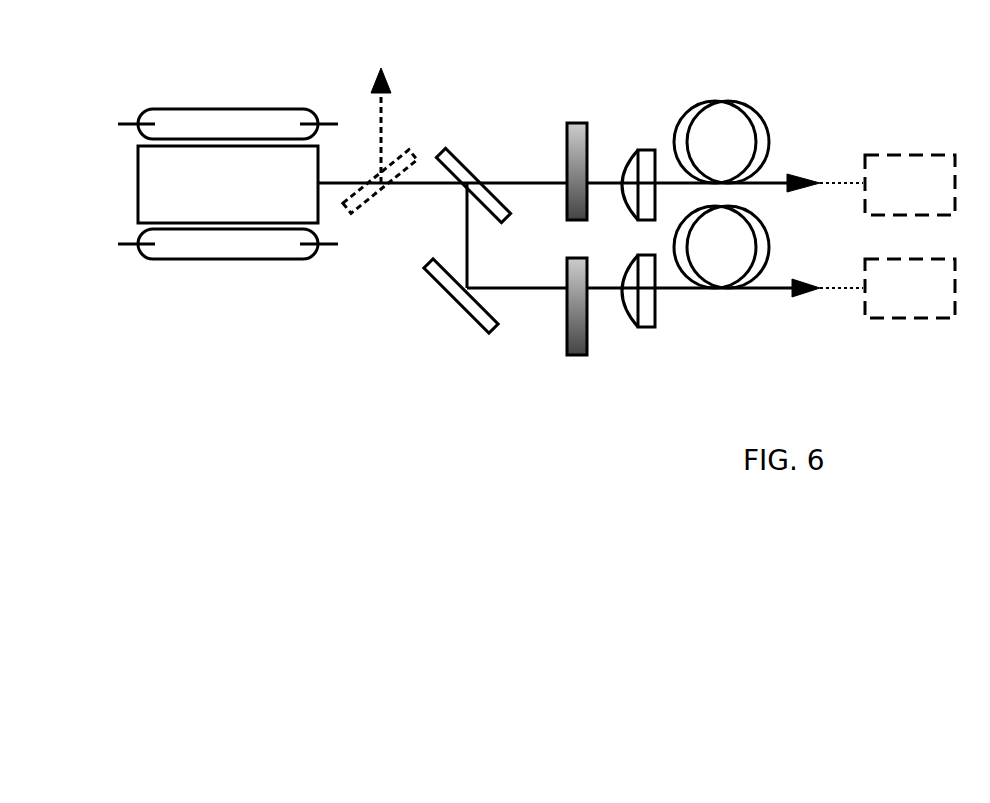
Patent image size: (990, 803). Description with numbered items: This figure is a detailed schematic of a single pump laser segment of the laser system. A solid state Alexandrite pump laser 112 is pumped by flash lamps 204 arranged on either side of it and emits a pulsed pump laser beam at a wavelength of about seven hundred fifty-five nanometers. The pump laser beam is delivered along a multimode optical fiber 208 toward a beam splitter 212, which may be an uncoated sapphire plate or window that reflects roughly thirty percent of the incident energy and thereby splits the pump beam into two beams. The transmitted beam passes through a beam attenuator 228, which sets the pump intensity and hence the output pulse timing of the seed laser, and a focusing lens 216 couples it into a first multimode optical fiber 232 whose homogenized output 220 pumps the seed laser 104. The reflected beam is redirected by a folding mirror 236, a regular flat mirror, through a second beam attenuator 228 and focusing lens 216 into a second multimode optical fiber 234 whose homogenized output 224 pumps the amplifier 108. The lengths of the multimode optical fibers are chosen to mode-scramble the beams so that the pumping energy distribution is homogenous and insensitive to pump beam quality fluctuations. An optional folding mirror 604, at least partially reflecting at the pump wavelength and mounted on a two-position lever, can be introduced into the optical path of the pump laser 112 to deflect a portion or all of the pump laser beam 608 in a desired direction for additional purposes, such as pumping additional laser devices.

The seed laser 104 is at (931, 201).
The amplifier 108 is at (931, 304).
The pump laser 112 is at (249, 197).
The flash lamp 204 is at (218, 108).
The multimode optical fiber 208 is at (430, 187).
The beam splitter 212 is at (483, 177).
The focusing lens 216 is at (646, 163).
The multimode optical fiber output 220 is at (792, 178).
The multimode optical fiber output 224 is at (788, 293).
The beam attenuator 228 is at (568, 120).
The first multimode optical fiber 232 is at (713, 102).
The second multimode optical fiber 234 is at (722, 292).
The folding mirror 236 is at (443, 293).
The optional folding mirror 604 is at (373, 212).
The pump laser beam 608 is at (383, 110).